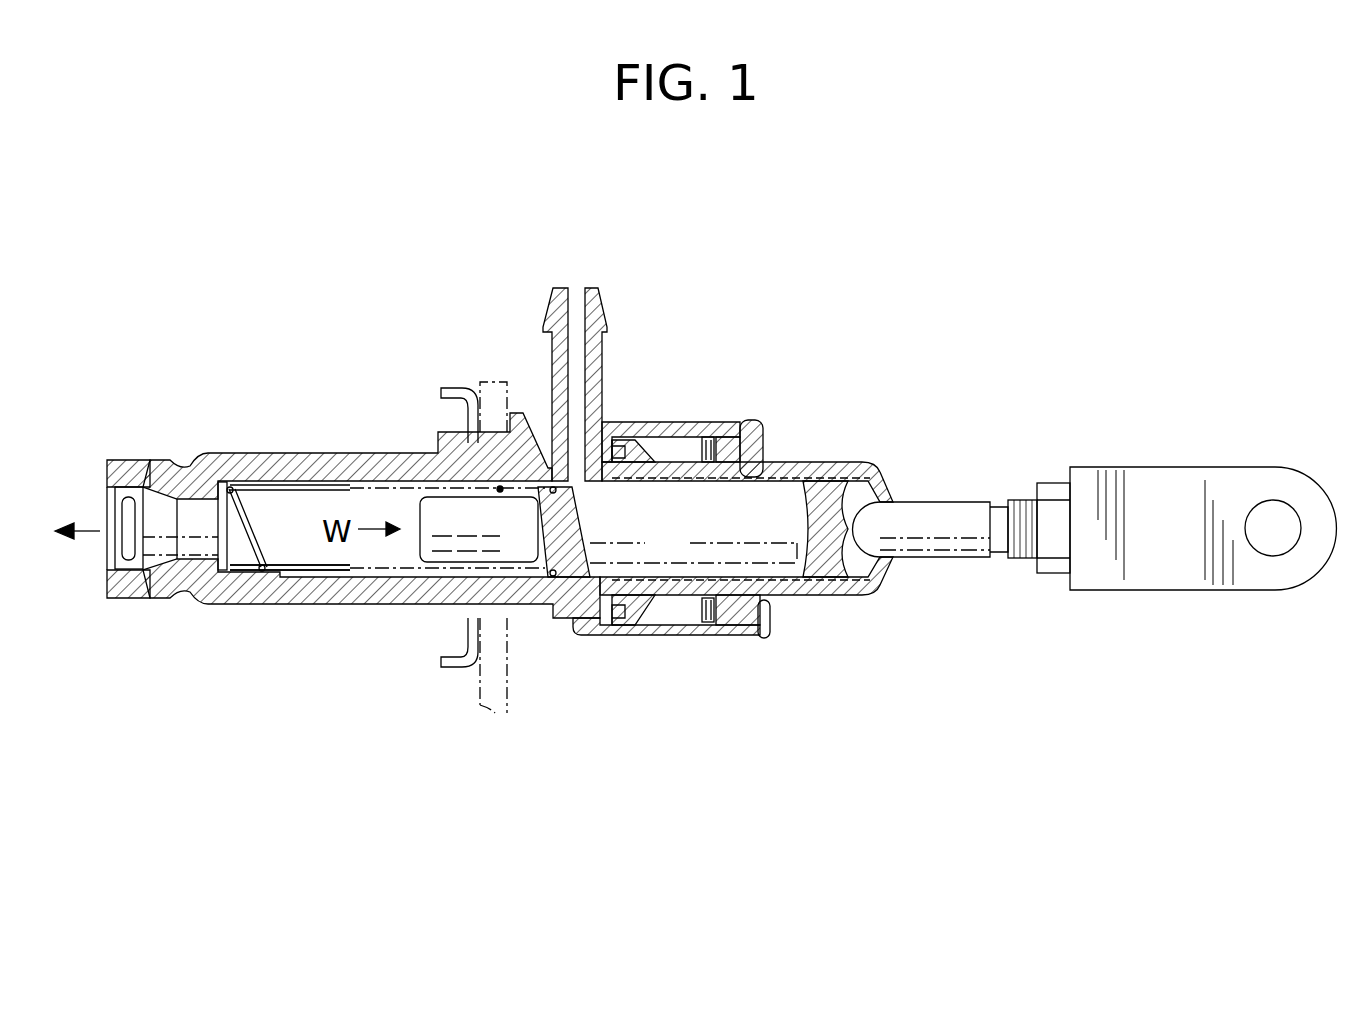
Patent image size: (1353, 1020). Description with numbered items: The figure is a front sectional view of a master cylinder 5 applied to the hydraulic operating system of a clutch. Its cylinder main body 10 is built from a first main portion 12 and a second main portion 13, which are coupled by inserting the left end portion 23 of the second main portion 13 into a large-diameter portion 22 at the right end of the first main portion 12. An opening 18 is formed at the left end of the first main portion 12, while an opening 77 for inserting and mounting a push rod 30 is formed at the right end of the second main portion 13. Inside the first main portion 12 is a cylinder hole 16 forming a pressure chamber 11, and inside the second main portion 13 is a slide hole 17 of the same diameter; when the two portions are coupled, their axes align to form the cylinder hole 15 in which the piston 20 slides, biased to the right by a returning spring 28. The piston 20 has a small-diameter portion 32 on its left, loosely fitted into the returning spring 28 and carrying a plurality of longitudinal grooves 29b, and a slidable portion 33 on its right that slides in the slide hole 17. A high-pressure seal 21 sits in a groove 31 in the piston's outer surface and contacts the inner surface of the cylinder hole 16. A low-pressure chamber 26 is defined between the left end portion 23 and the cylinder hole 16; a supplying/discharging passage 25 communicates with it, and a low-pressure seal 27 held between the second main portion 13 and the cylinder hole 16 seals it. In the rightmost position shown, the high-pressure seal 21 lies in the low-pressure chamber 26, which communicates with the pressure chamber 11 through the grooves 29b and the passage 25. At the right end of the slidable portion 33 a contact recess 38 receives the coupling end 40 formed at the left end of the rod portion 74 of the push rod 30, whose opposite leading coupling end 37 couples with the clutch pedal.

The master cylinder 5 is at (459, 681).
The cylinder main body 10 is at (229, 606).
The pressure chamber 11 is at (278, 515).
The first main portion 12 is at (138, 462).
The second main portion 13 is at (775, 615).
The cylinder hole 15 is at (343, 490).
The cylinder hole 16 is at (290, 567).
The slide hole 17 is at (770, 500).
The opening 18 is at (163, 550).
The piston 20 is at (793, 600).
The high-pressure seal 21 is at (548, 588).
The large-diameter portion 22 is at (645, 455).
The left end portion 23 is at (668, 475).
The supplying/discharging passage 25 is at (573, 300).
The low-pressure chamber 26 is at (575, 487).
The low-pressure seal 27 is at (628, 600).
The returning spring 28 is at (278, 580).
The grooves 29b is at (550, 462).
The push rod 30 is at (965, 545).
The groove 31 is at (590, 543).
The small-diameter portion 32 is at (410, 562).
The slidable portion 33 is at (822, 565).
The coupling end 37 is at (1185, 492).
The contact recess 38 is at (878, 600).
The coupling end 40 is at (888, 480).
The rod portion 74 is at (946, 505).
The opening 77 is at (901, 559).